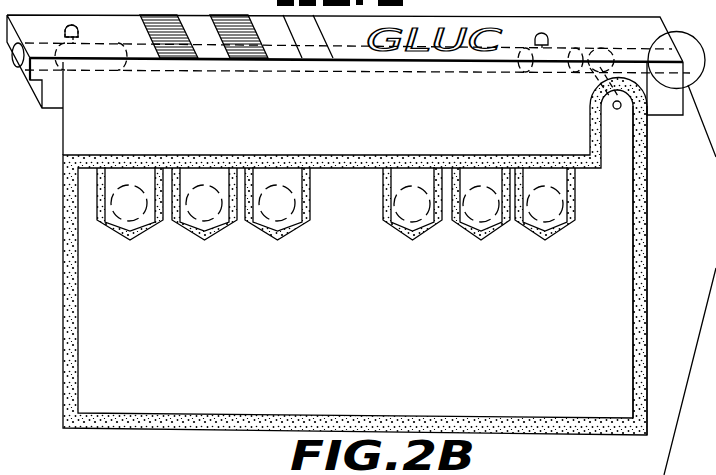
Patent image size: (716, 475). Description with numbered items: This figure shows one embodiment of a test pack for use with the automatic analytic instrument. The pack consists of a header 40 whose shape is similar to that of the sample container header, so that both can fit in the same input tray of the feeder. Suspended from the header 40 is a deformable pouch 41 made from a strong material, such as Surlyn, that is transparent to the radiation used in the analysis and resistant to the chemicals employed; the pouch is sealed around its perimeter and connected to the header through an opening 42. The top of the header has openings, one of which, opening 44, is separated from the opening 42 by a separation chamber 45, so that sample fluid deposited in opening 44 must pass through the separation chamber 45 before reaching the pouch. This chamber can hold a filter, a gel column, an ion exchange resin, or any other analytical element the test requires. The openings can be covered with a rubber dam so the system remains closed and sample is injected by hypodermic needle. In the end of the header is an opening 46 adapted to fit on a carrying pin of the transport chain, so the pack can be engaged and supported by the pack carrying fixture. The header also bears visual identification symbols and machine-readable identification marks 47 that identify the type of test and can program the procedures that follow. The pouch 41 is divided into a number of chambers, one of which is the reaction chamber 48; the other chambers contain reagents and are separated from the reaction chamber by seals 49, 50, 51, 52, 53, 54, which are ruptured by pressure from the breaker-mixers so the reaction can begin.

The header 40 is at (650, 32).
The deformable pouch 41 is at (92, 350).
The opening 42 is at (618, 109).
The opening 44 is at (72, 28).
The separation chamber 45 is at (154, 69).
The opening 46 is at (542, 36).
The identification marks 47 is at (247, 58).
The reaction chamber 48 is at (617, 375).
The seal 49 is at (137, 237).
The seal 50 is at (205, 237).
The seal 51 is at (279, 237).
The seal 52 is at (411, 239).
The seal 53 is at (478, 239).
The seal 54 is at (546, 239).